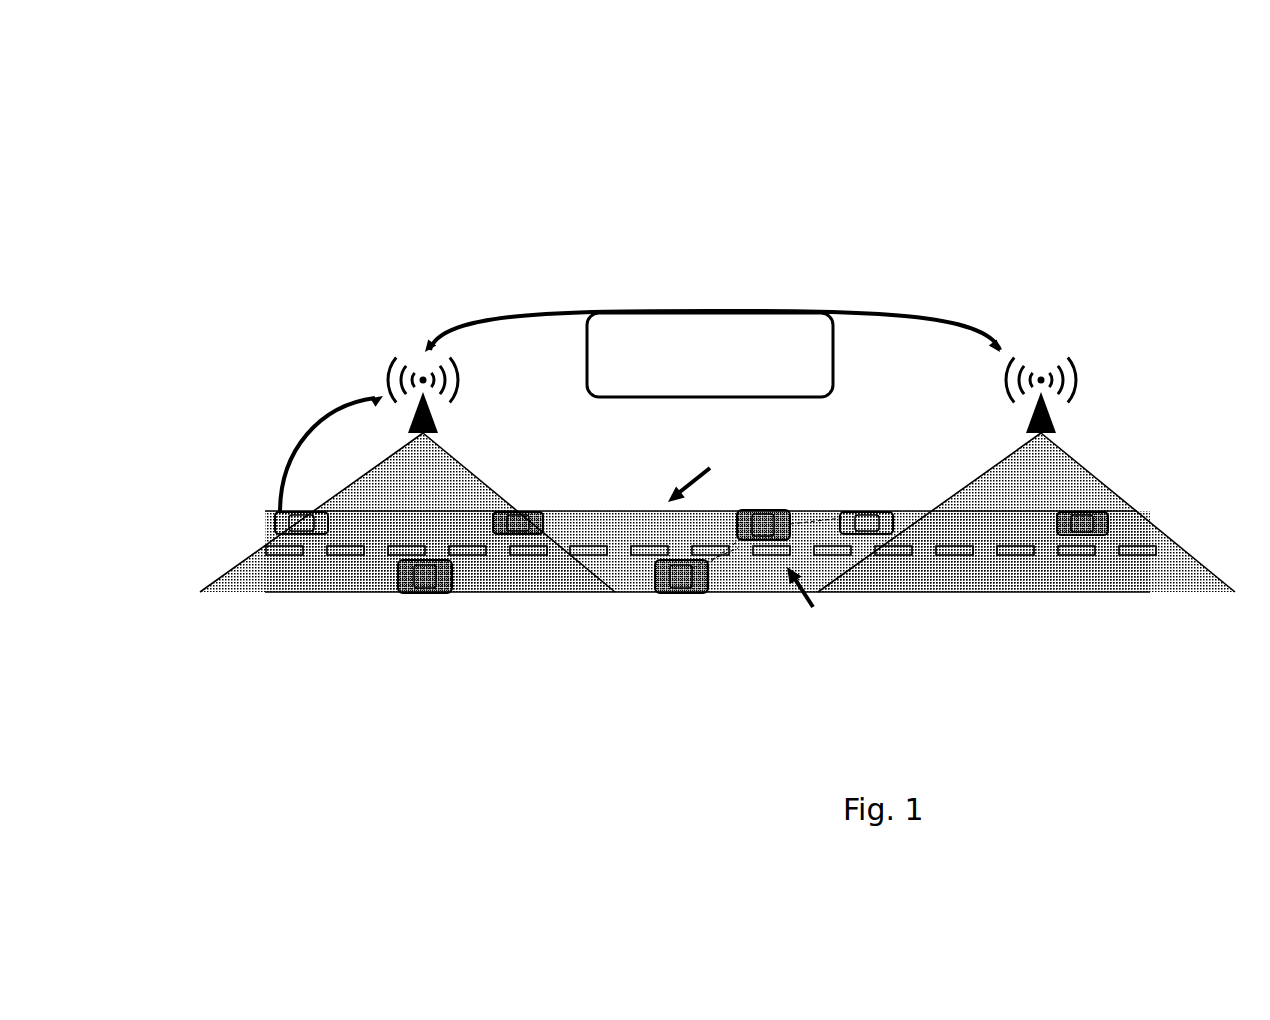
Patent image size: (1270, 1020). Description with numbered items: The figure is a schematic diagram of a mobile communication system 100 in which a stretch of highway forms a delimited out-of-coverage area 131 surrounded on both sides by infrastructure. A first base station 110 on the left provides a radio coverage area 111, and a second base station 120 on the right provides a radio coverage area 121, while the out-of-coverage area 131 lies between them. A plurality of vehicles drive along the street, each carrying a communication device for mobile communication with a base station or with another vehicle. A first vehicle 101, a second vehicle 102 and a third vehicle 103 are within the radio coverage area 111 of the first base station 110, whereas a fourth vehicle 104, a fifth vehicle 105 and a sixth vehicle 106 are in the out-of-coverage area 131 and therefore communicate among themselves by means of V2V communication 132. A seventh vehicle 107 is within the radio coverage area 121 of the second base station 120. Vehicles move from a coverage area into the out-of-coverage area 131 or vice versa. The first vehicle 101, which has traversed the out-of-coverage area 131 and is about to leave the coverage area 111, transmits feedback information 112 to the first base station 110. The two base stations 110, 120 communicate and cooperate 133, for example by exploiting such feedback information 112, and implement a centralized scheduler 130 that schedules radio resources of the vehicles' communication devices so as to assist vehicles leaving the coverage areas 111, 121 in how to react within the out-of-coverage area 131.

The mobile communication system 100 is at (225, 196).
The first vehicle 101 is at (303, 522).
The second vehicle 102 is at (427, 572).
The third vehicle 103 is at (533, 527).
The fourth vehicle 104 is at (687, 567).
The fifth vehicle 105 is at (770, 510).
The sixth vehicle 106 is at (870, 520).
The vehicle 107 is at (1090, 535).
The first base station 110 is at (375, 372).
The radio coverage area of the first base station 111 is at (463, 455).
The feedback information 112 is at (278, 475).
The second base station 120 is at (1080, 362).
The radio coverage area of the second base station 121 is at (1088, 455).
The scheduler 130 is at (822, 355).
The out-of-coverage area 131 is at (717, 457).
The V2V communication 132 is at (817, 675).
The base station communication and cooperation 133 is at (910, 318).